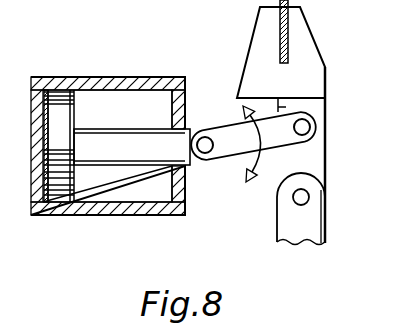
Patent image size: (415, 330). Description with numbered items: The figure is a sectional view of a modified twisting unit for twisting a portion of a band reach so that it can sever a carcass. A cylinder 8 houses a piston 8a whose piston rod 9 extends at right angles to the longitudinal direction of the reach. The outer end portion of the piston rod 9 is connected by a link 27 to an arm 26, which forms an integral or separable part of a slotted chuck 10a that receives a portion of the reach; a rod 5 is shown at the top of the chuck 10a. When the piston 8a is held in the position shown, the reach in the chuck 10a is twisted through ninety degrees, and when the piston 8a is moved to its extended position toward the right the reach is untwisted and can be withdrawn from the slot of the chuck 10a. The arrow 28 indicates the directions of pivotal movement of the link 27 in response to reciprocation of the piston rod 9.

The rod 5 is at (290, 40).
The cylinder 8 is at (103, 100).
The piston 8a is at (58, 216).
The piston rod 9 is at (145, 135).
The slotted chuck 10a is at (256, 28).
The arm 26 is at (268, 97).
The link 27 is at (226, 153).
The arrow 28 is at (277, 146).